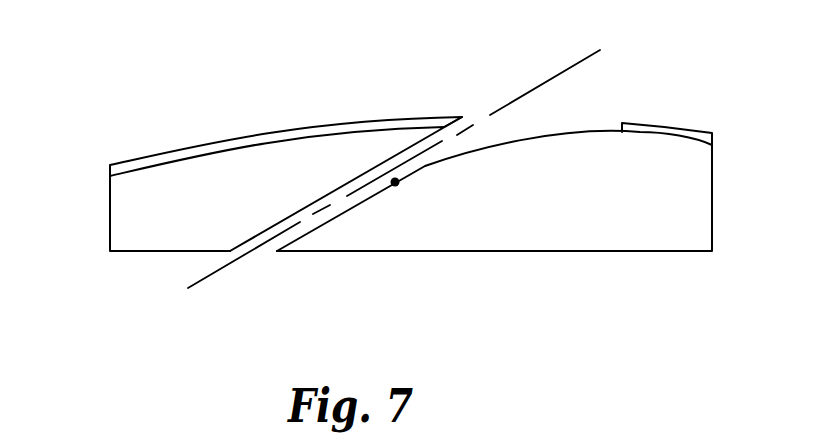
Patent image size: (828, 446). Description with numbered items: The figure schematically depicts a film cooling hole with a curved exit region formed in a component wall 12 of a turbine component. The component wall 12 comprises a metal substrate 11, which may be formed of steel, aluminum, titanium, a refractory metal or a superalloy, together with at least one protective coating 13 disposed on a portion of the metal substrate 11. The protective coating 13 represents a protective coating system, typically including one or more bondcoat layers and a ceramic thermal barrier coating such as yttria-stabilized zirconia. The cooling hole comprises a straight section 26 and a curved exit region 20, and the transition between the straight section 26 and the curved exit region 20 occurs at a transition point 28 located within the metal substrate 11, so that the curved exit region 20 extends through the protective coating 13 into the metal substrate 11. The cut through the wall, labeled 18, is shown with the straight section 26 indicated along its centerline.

The metal substrate 11 is at (215, 193).
The component wall 12 is at (125, 212).
The protective coating 13 is at (203, 142).
The cut / slot 18 is at (282, 241).
The curved exit region 20 is at (495, 145).
The straight section 26 is at (318, 220).
The transition point 28 is at (395, 182).